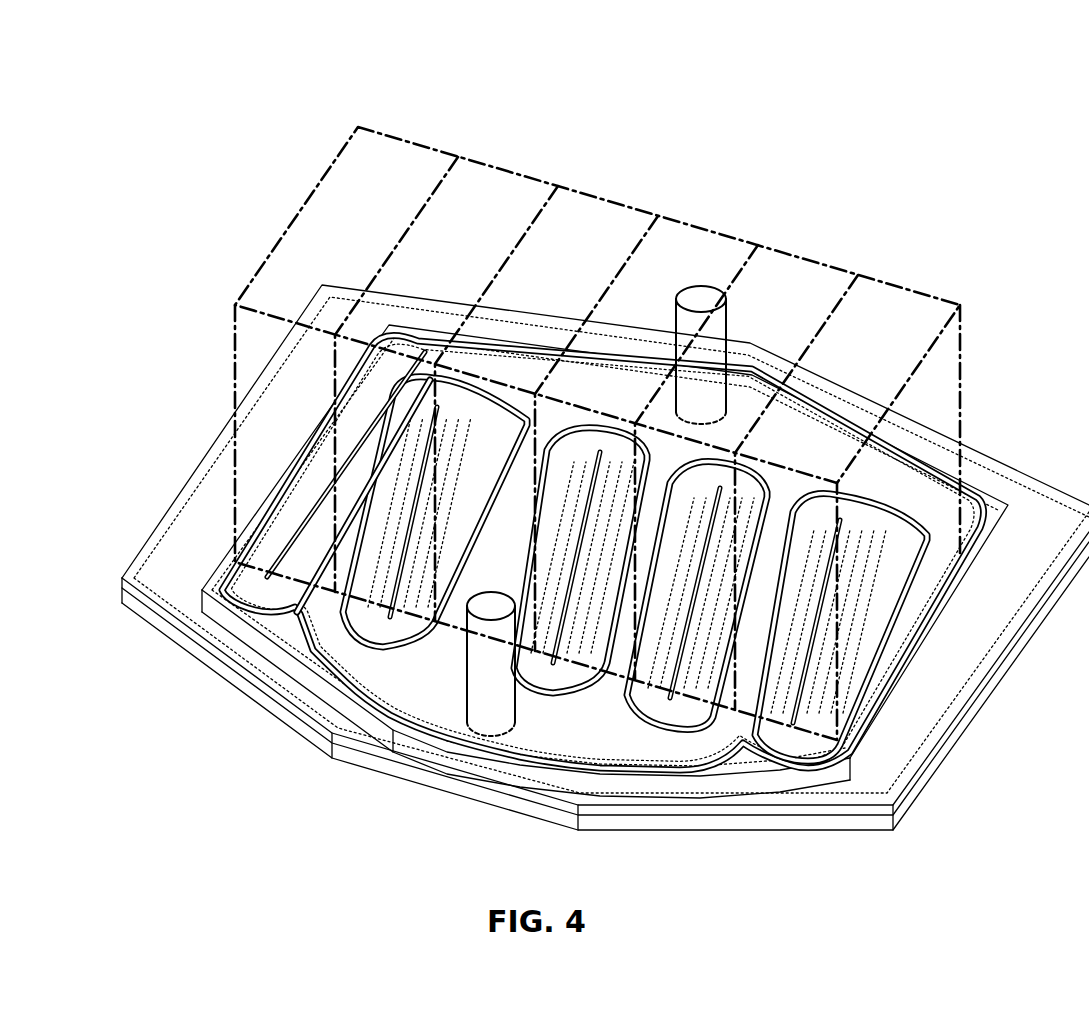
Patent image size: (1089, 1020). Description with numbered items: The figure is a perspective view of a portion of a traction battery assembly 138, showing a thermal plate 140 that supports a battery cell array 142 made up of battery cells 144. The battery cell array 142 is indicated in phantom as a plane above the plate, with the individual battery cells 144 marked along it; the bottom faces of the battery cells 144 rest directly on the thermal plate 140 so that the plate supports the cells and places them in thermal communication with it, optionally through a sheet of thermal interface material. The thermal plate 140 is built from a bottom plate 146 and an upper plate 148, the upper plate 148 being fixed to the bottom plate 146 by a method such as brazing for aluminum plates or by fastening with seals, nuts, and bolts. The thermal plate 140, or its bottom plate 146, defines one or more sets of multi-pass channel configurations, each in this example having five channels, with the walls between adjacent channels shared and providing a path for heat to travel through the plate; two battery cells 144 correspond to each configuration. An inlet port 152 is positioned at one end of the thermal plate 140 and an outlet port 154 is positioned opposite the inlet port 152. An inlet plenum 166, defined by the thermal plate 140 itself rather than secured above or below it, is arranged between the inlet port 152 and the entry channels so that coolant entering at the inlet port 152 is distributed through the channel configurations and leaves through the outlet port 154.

The traction battery assembly 138 is at (260, 186).
The thermal plate 140 is at (200, 462).
The battery cell array 142 is at (495, 162).
The battery cells 144 is at (412, 132).
The bottom plate 146 is at (125, 612).
The upper plate 148 is at (128, 580).
The inlet port 152 is at (540, 715).
The outlet port 154 is at (705, 297).
The inlet plenum 166 is at (370, 675).